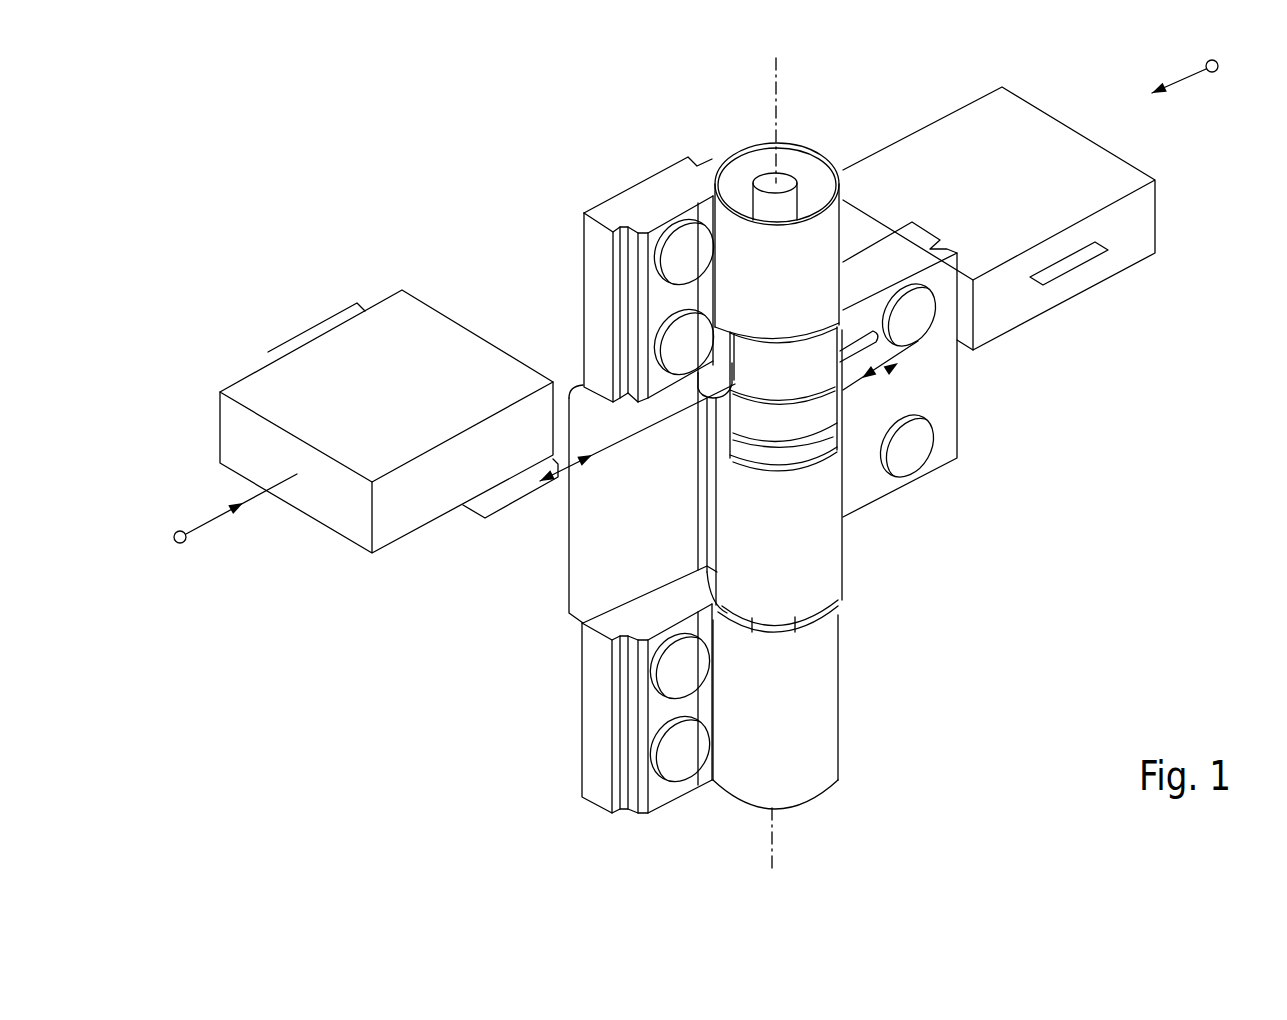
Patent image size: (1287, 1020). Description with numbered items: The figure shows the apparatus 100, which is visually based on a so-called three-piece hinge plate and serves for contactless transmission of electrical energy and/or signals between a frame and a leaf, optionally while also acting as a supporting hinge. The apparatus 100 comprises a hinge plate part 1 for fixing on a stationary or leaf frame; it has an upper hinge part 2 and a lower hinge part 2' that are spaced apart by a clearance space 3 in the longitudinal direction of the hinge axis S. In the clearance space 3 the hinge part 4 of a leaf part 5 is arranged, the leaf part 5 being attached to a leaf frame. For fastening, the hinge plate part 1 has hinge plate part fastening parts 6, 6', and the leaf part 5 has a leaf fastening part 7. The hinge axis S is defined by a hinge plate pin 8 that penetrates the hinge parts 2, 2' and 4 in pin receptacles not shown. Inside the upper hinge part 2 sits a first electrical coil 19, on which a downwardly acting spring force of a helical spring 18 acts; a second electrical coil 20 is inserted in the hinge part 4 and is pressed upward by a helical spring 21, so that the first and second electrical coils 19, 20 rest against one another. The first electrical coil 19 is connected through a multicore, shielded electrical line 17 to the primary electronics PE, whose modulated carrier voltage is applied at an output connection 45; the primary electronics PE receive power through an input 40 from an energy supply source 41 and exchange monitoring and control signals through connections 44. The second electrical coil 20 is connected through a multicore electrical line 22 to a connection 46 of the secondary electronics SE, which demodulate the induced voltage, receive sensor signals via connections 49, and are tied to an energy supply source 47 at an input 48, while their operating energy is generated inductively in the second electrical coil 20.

The apparatus 100 is at (296, 181).
The hinge plate part 1 is at (608, 161).
The upper hinge part 2 is at (817, 241).
The lower hinge part 2' is at (807, 712).
The clearance space 3 is at (566, 504).
The hinge part 4 is at (738, 514).
The leaf part 5 is at (972, 497).
The hinge plate part fastening part 6 is at (629, 279).
The hinge plate part fastening part 6' is at (621, 708).
The leaf fastening part 7 is at (940, 408).
The hinge plate pin 8 is at (768, 183).
The electrical line 17 is at (652, 430).
The helical spring 18 is at (742, 378).
The first electrical coil 19 is at (769, 389).
The second electrical coil 20 is at (769, 432).
The helical spring 21 is at (791, 468).
The electrical line 22 is at (920, 347).
The input 40 is at (366, 433).
The energy supply source 41 is at (181, 543).
The connections 44 is at (313, 325).
The output connection 45 is at (460, 514).
The connection 46 is at (962, 340).
The energy supply source 47 is at (1217, 72).
The input 48 is at (1052, 226).
The connections 49 is at (1070, 260).
The hinge axis S is at (778, 70).
The primary electronics PE is at (372, 398).
The secondary electronics SE is at (971, 200).